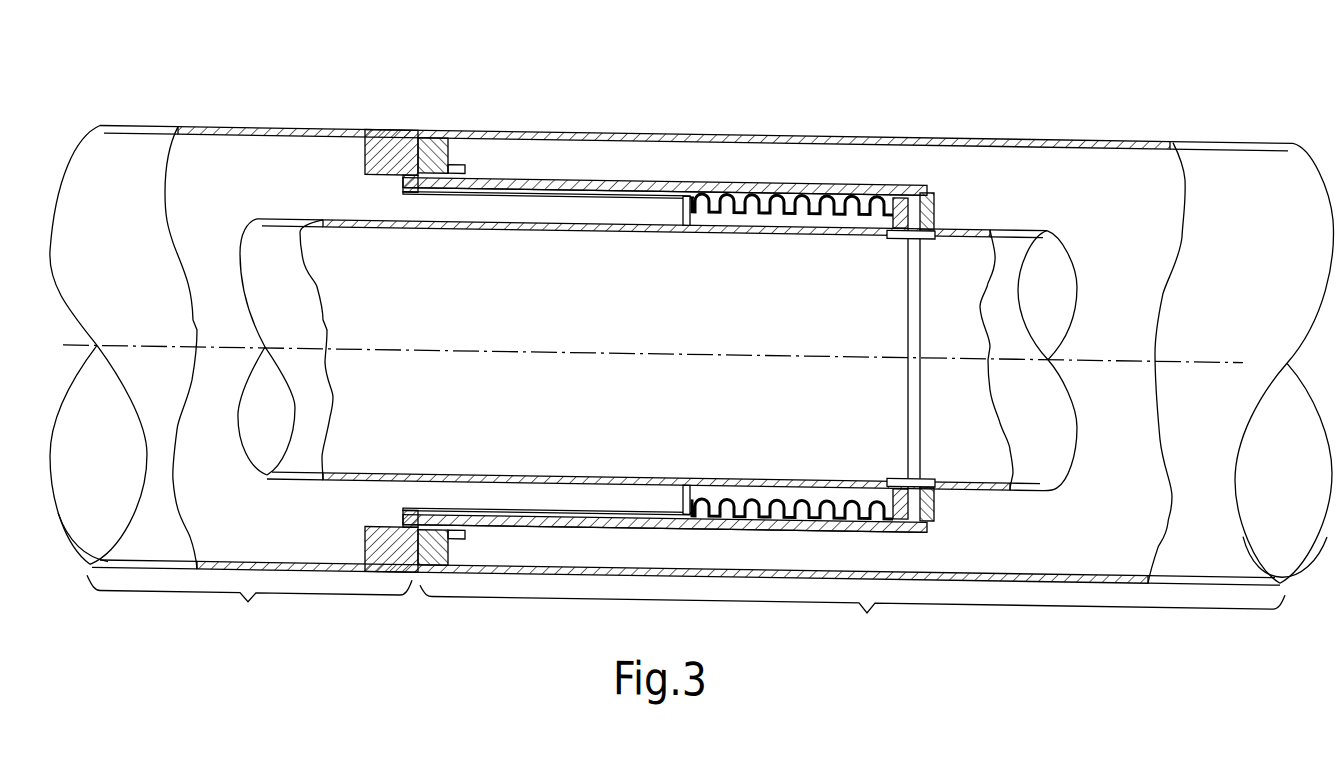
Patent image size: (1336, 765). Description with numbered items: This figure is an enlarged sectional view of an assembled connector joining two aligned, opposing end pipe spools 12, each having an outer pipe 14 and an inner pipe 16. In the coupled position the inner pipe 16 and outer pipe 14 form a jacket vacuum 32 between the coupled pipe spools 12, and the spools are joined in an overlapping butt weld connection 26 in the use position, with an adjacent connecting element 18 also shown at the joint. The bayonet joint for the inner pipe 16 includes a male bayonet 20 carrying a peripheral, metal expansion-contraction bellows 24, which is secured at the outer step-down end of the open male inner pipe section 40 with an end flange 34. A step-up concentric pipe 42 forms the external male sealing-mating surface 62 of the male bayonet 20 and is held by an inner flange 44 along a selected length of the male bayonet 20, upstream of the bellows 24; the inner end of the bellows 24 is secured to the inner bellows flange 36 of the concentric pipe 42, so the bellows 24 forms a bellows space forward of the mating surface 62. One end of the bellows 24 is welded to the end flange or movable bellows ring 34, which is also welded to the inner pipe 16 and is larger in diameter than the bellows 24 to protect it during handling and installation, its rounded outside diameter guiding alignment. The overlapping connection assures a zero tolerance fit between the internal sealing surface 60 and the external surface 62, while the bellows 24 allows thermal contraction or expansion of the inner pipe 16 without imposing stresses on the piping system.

The end pipe spool 12 is at (686, 613).
The outer pipe 14 is at (692, 328).
The inner pipe 16 is at (323, 212).
The flange 18 is at (392, 126).
The male bayonet 20 is at (682, 302).
The expansion-contraction bellows 24 is at (838, 181).
The butt weld connection 26 is at (367, 152).
The jacket vacuum 32 is at (193, 209).
The end flange 34 is at (900, 184).
The inner bellows flange 36 is at (688, 185).
The male inner pipe section 40 is at (920, 258).
The concentric pipe 42 is at (638, 183).
The inner flange 44 is at (683, 195).
The internal sealing surface 60 is at (525, 169).
The external sealing-mating surface 62 is at (598, 184).